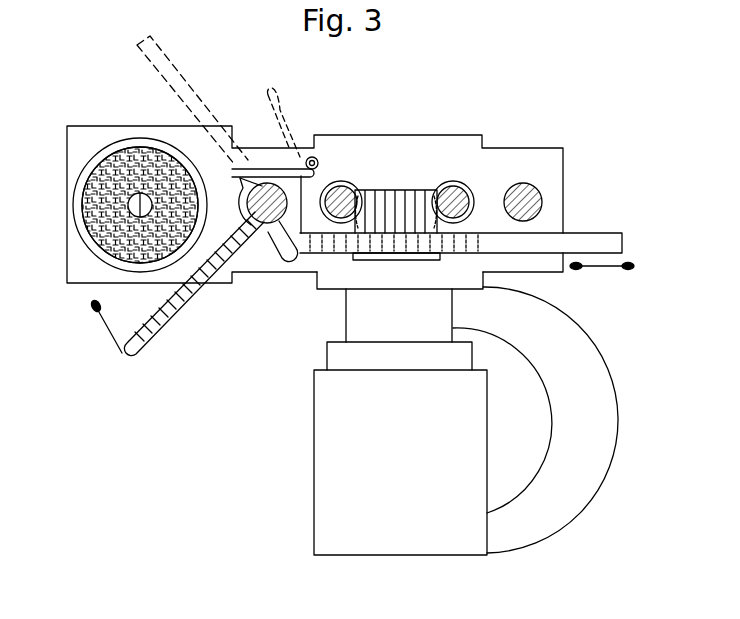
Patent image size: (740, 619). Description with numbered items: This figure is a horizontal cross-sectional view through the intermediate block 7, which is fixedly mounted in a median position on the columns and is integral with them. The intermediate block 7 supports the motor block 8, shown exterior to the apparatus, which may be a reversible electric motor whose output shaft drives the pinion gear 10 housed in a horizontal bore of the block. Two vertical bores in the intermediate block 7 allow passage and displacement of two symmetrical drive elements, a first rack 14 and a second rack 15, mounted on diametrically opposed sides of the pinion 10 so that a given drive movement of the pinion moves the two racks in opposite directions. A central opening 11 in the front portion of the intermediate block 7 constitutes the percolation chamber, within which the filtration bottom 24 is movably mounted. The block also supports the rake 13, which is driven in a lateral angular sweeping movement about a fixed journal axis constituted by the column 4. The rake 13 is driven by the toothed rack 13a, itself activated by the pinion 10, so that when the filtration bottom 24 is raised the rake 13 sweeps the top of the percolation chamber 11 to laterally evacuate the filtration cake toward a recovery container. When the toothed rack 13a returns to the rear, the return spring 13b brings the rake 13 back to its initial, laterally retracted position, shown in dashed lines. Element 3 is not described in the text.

The guide hole 3 is at (540, 196).
The column 4 is at (266, 226).
The intermediate block 7 is at (515, 160).
The motor block 8 is at (340, 485).
The pinion gear 10 is at (393, 190).
The central opening 11 is at (85, 243).
The rake 13 is at (167, 322).
The toothed rack 13a is at (578, 245).
The return spring 13b is at (323, 78).
The first rack 14 is at (336, 186).
The rack 15 is at (451, 188).
The filtration bottom 24 is at (103, 160).